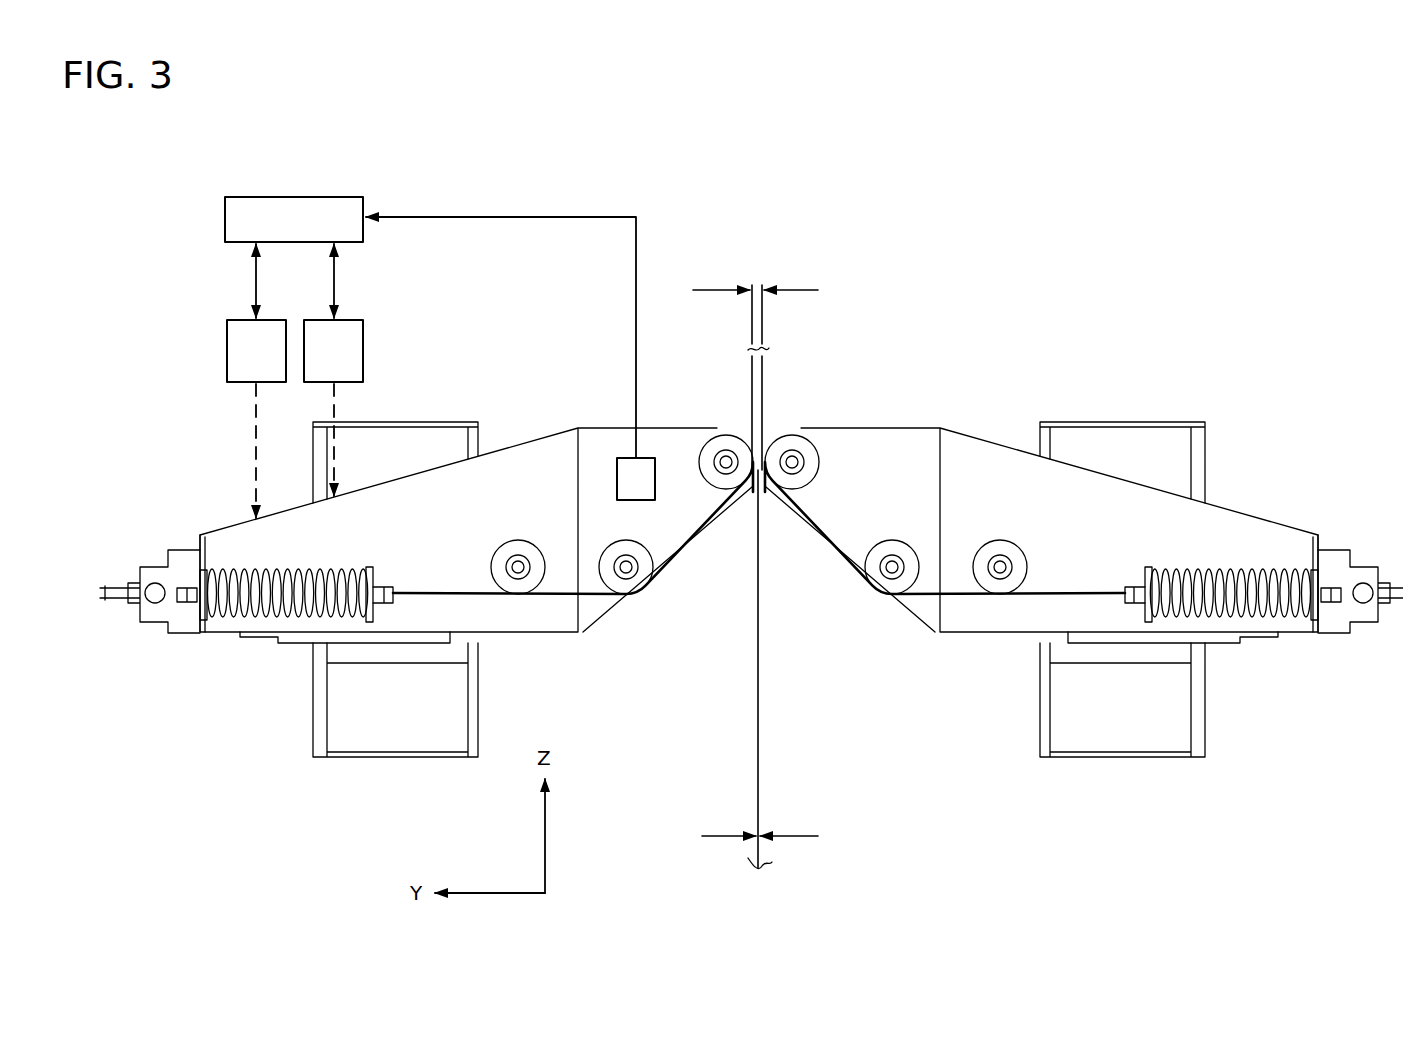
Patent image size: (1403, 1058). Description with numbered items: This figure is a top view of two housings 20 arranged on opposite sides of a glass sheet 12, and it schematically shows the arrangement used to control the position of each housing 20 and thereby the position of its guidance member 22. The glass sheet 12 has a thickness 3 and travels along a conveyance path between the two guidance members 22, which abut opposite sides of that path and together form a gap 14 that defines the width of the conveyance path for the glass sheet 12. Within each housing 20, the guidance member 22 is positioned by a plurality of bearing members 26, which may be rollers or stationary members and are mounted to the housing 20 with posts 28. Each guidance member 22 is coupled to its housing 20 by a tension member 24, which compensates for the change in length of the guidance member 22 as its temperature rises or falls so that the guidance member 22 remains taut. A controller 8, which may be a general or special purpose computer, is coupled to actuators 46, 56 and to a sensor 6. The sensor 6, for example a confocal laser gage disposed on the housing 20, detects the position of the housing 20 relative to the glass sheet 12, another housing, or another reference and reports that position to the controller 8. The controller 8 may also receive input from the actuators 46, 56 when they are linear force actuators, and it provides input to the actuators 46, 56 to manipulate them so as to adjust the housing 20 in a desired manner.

The thickness 3 is at (806, 836).
The sensor 6 is at (622, 462).
The controller 8 is at (237, 220).
The glass sheet 12 is at (760, 742).
The gap 14 is at (802, 290).
The housing 20 is at (497, 470).
The guidance member 22 is at (713, 523).
The tension member 24 is at (218, 613).
The bearing member 26 is at (880, 543).
The post 28 is at (903, 557).
The actuator 46 is at (350, 353).
The actuator 56 is at (255, 351).